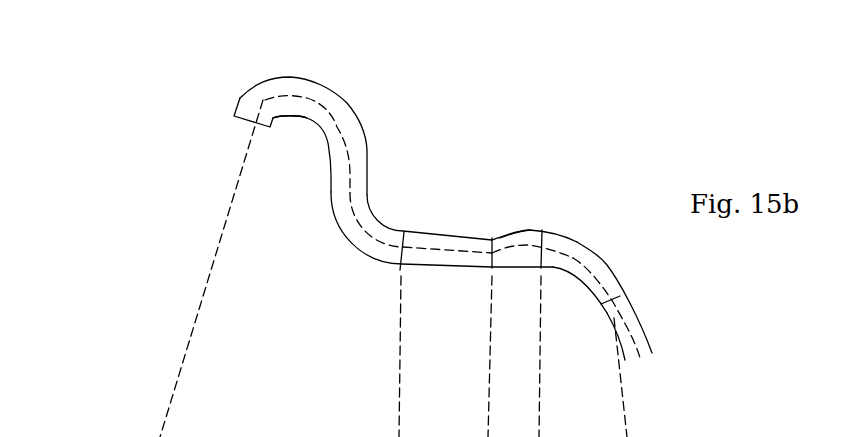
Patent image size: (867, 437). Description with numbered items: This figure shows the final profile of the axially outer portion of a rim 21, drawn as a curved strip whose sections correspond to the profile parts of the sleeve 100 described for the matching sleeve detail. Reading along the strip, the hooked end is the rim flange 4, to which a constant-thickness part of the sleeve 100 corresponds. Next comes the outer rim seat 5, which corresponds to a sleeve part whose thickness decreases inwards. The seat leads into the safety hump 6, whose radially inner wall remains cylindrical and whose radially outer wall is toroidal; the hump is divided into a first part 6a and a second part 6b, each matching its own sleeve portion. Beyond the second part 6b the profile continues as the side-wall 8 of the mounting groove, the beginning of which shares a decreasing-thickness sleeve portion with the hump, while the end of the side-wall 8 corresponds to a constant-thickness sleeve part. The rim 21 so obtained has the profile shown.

The rim flange 4 is at (263, 100).
The outer rim seat 5 is at (455, 240).
The safety hump 6 is at (555, 242).
The first part of the safety hump 6a is at (518, 253).
The second part of the safety hump 6b is at (582, 258).
The side-wall of the mounting groove 8 is at (621, 313).
The rim 21 is at (280, 160).
The sleeve 100 is at (253, 423).